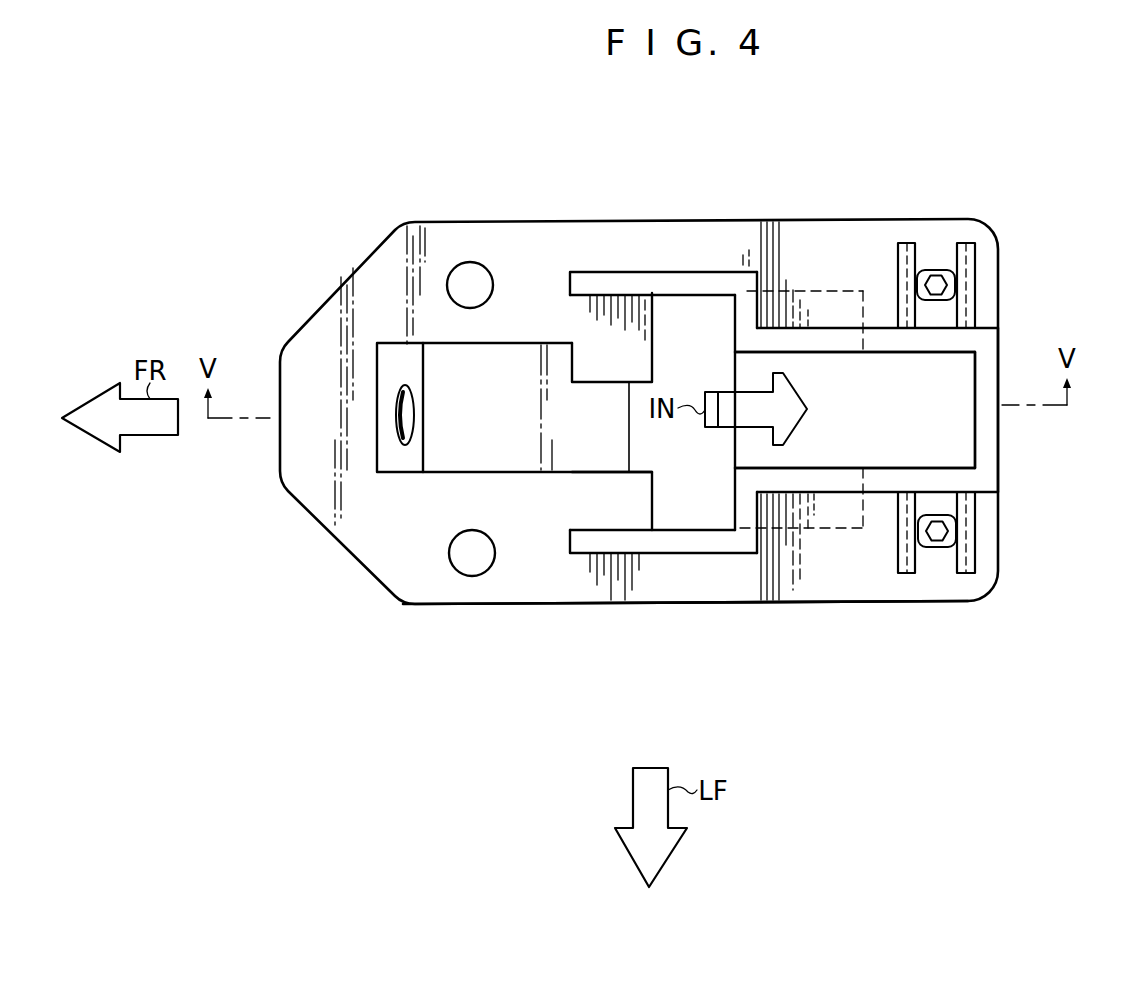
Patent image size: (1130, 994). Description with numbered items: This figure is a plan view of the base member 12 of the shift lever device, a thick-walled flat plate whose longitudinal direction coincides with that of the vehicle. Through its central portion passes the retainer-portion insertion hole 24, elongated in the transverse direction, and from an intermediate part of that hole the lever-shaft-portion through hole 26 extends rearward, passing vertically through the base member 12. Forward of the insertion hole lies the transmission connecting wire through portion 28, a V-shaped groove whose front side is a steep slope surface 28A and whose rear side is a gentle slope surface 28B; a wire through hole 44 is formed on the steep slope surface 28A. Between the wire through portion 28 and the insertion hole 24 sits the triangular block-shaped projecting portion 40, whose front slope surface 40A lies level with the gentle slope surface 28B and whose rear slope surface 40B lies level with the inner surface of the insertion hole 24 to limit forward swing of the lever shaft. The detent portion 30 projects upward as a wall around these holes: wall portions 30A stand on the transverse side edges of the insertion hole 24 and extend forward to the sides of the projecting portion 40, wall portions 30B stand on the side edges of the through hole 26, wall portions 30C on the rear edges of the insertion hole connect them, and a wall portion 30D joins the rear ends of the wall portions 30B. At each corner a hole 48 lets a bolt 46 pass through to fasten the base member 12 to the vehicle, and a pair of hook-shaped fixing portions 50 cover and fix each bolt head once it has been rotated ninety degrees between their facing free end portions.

The base member 12 is at (726, 166).
The retainer-portion insertion hole 24 is at (653, 497).
The lever-shaft-portion through hole 26 is at (975, 387).
The transmission connecting wire through portion 28 is at (506, 345).
The steep slope surface 28A is at (400, 462).
The gentle slope surface 28B is at (518, 420).
The detent portion 30 is at (683, 262).
The wall portions 30A is at (600, 280).
The wall portions 30B is at (873, 328).
The wall portions 30C is at (733, 313).
The wall portion 30D is at (998, 440).
The block-shaped projecting portion 40 is at (547, 473).
The slope surface 40A is at (604, 396).
The slope surface 40B is at (642, 432).
The wire through hole 44 is at (418, 413).
The bolt 46 is at (937, 270).
The hole 48 is at (471, 270).
The fixing portions 50 is at (975, 272).